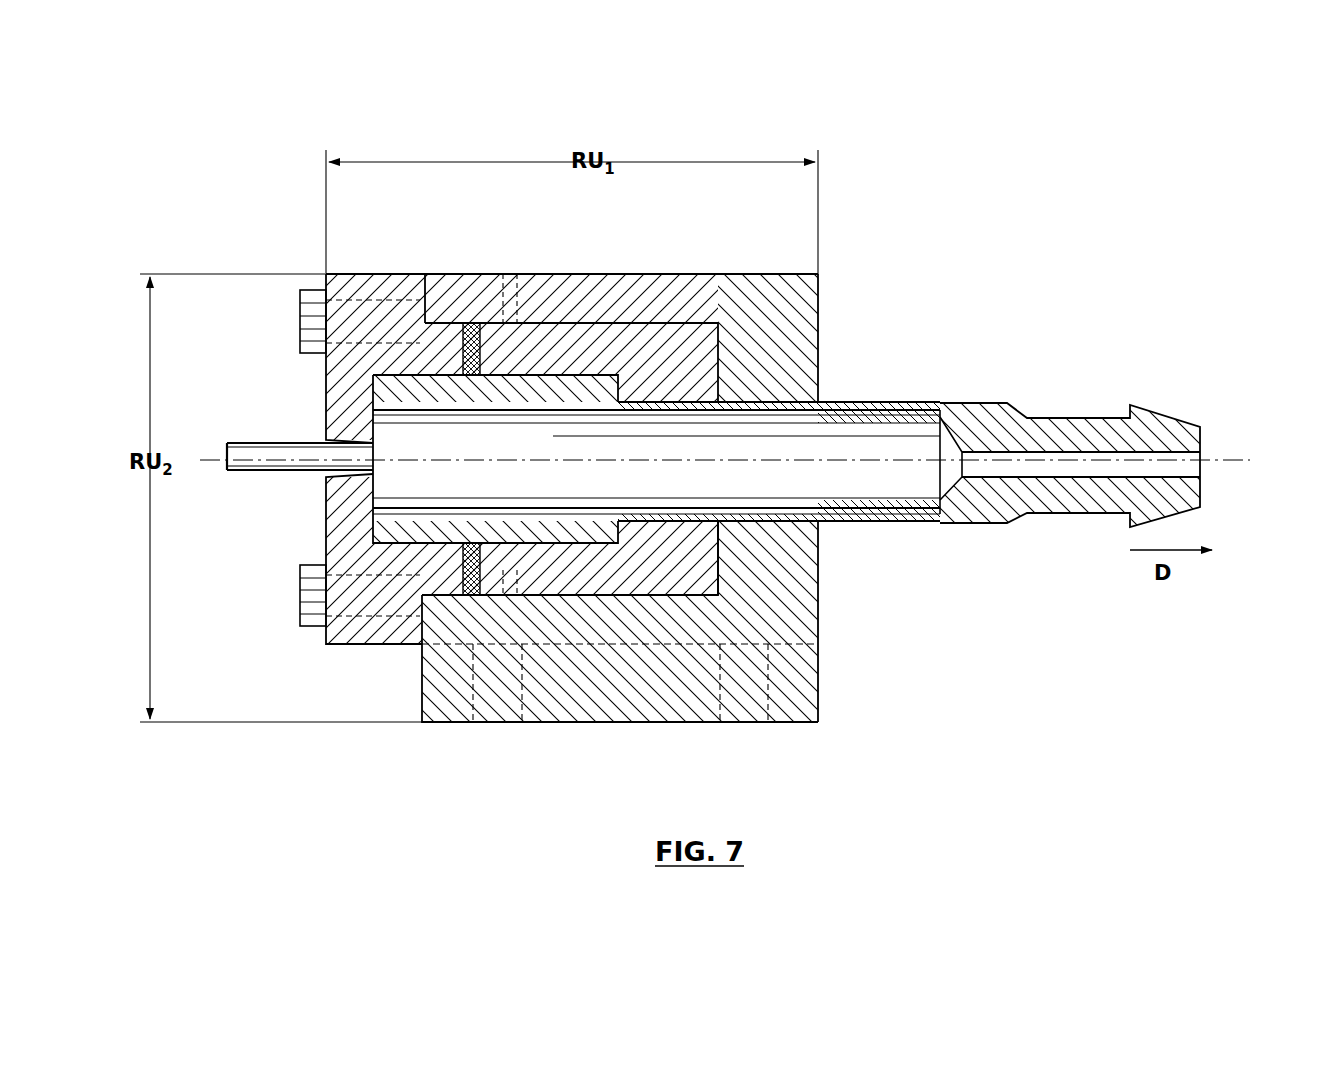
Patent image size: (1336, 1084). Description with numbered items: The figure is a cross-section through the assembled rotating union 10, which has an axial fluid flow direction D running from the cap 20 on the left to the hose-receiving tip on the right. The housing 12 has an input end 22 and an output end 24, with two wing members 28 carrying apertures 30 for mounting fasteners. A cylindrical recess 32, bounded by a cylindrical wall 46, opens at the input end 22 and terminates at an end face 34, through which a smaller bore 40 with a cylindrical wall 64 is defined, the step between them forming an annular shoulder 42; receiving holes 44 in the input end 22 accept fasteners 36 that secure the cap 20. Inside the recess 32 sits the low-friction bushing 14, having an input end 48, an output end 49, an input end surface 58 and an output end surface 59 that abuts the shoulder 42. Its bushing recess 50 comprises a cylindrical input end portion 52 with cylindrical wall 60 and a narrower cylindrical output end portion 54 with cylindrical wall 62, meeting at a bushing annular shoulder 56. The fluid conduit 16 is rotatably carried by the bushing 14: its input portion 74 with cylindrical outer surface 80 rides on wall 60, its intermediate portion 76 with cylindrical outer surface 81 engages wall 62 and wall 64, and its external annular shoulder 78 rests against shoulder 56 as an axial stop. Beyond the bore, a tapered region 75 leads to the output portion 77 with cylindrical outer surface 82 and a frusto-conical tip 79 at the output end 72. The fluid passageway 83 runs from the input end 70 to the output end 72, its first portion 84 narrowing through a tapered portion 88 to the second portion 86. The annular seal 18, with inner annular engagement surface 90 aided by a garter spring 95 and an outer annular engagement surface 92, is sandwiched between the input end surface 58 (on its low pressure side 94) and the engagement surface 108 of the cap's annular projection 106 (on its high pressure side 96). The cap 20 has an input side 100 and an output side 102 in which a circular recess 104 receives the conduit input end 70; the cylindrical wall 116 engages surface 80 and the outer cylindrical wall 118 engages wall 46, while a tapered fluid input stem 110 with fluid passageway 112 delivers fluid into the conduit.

The rotating union 10 is at (888, 203).
The housing 12 is at (778, 312).
The cylindrical low-friction bushing 14 is at (662, 372).
The fluid conduit 16 is at (975, 402).
The annular seal 18 is at (455, 328).
The cap 20 is at (363, 302).
The input end 22 is at (418, 662).
The output end 24 is at (838, 540).
The wing members 28 is at (655, 722).
The apertures 30 is at (522, 706).
The cylindrical recess 32 is at (531, 360).
The end face 34 is at (820, 614).
The fasteners 36 is at (300, 319).
The bore 40 is at (806, 387).
The annular shoulder 42 is at (680, 390).
The receiving holes 44 is at (517, 300).
The cylindrical wall 46 is at (566, 312).
The input end 48 is at (496, 538).
The output end 49 is at (765, 646).
The bushing recess 50 is at (628, 372).
The cylindrical input end portion 52 is at (535, 362).
The cylindrical output end portion 54 is at (674, 391).
The bushing annular shoulder 56 is at (576, 600).
The input end surface 58 is at (400, 350).
The output end surface 59 is at (765, 372).
The cylindrical wall 60 is at (578, 370).
The cylindrical wall 62 is at (653, 398).
The cylindrical wall 64 is at (822, 352).
The input end 70 is at (368, 522).
The output end 72 is at (1216, 473).
The input portion 74 is at (372, 396).
The tapered region 75 is at (1020, 411).
The intermediate portion 76 is at (696, 600).
The output portion 77 is at (1078, 516).
The external annular shoulder 78 is at (610, 694).
The frusto-conical tip 79 is at (1170, 432).
The cylindrical outer surface 80 is at (477, 345).
The cylindrical outer surface 81 is at (880, 402).
The cylindrical outer surface 82 is at (1086, 411).
The fluid passageway 83 is at (922, 402).
The first portion 84 is at (765, 494).
The second portion 86 is at (1050, 448).
The tapered portion 88 is at (986, 522).
The inner annular engagement surface 90 is at (463, 378).
The outer annular engagement surface 92 is at (457, 600).
The low pressure side 94 is at (467, 600).
The garter spring 95 is at (522, 560).
The high pressure side 96 is at (381, 429).
The input side 100 is at (321, 361).
The output side 102 is at (411, 501).
The circular recess 104 is at (372, 549).
The annular projection 106 is at (400, 652).
The engagement surface 108 is at (494, 412).
The fluid input stem 110 is at (270, 446).
The fluid passageway 112 is at (262, 468).
The cylindrical wall 116 is at (325, 639).
The outer cylindrical wall 118 is at (438, 650).